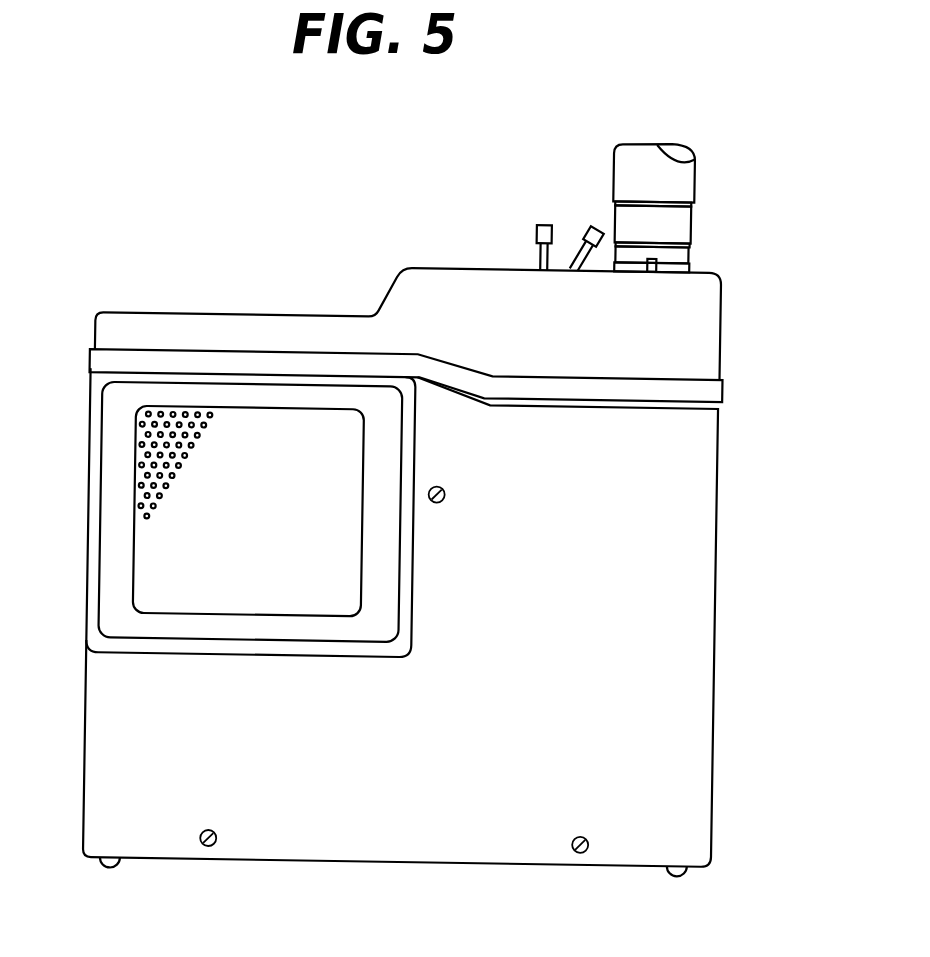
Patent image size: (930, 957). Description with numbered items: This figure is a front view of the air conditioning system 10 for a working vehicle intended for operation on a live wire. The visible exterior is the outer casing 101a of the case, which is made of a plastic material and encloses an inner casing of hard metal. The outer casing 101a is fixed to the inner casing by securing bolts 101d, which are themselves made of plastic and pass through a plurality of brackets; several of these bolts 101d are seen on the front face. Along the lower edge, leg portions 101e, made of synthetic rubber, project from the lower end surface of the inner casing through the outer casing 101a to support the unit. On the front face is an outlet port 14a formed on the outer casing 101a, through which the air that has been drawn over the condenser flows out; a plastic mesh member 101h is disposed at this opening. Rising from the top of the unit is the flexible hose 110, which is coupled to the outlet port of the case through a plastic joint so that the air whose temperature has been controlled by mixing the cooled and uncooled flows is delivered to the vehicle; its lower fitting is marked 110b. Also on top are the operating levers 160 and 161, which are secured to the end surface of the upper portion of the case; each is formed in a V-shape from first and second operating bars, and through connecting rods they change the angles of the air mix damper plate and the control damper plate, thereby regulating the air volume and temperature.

The air conditioning system 10 is at (410, 512).
The outlet port 14a is at (134, 531).
The outer casing 101a is at (694, 568).
The mesh member 101h is at (148, 589).
The bolt 101d is at (214, 852).
The leg portion 101e is at (113, 875).
The flexible hose 110 is at (684, 189).
The motor mounting flange 110b is at (685, 259).
The operating lever 160 is at (531, 228).
The operating lever 161 is at (587, 235).